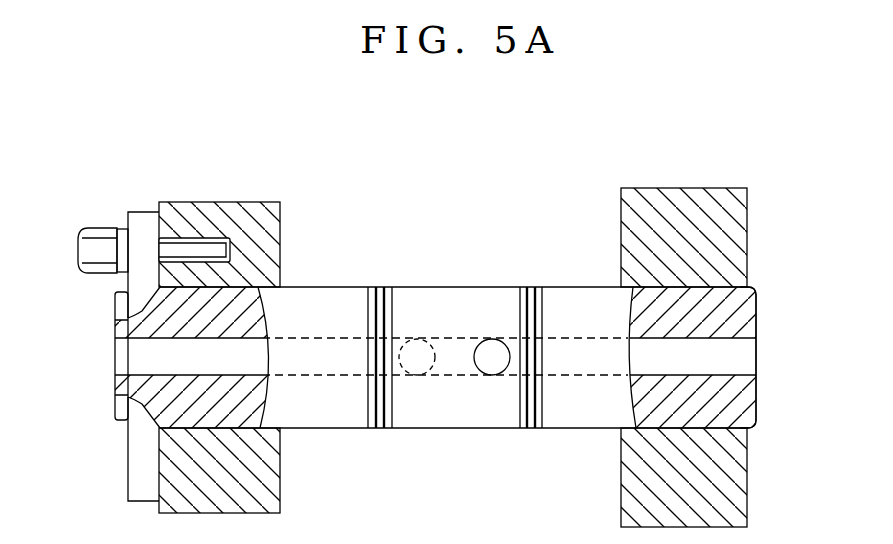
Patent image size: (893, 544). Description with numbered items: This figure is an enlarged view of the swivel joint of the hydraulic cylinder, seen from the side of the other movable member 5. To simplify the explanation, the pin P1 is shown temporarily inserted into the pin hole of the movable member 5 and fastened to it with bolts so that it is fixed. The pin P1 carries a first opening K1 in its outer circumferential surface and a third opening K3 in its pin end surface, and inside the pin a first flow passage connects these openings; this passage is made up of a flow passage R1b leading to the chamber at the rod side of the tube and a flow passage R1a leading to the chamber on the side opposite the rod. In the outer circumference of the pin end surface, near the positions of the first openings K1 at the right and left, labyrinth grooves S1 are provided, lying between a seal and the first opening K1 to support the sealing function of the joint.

The other movable member 5 is at (218, 202).
The third opening K3 is at (115, 358).
The first opening K1 is at (418, 352).
The labyrinth groove S1 is at (382, 438).
The pin P1 is at (757, 308).
The flow passage R1a is at (567, 355).
The flow passage R1b is at (330, 357).